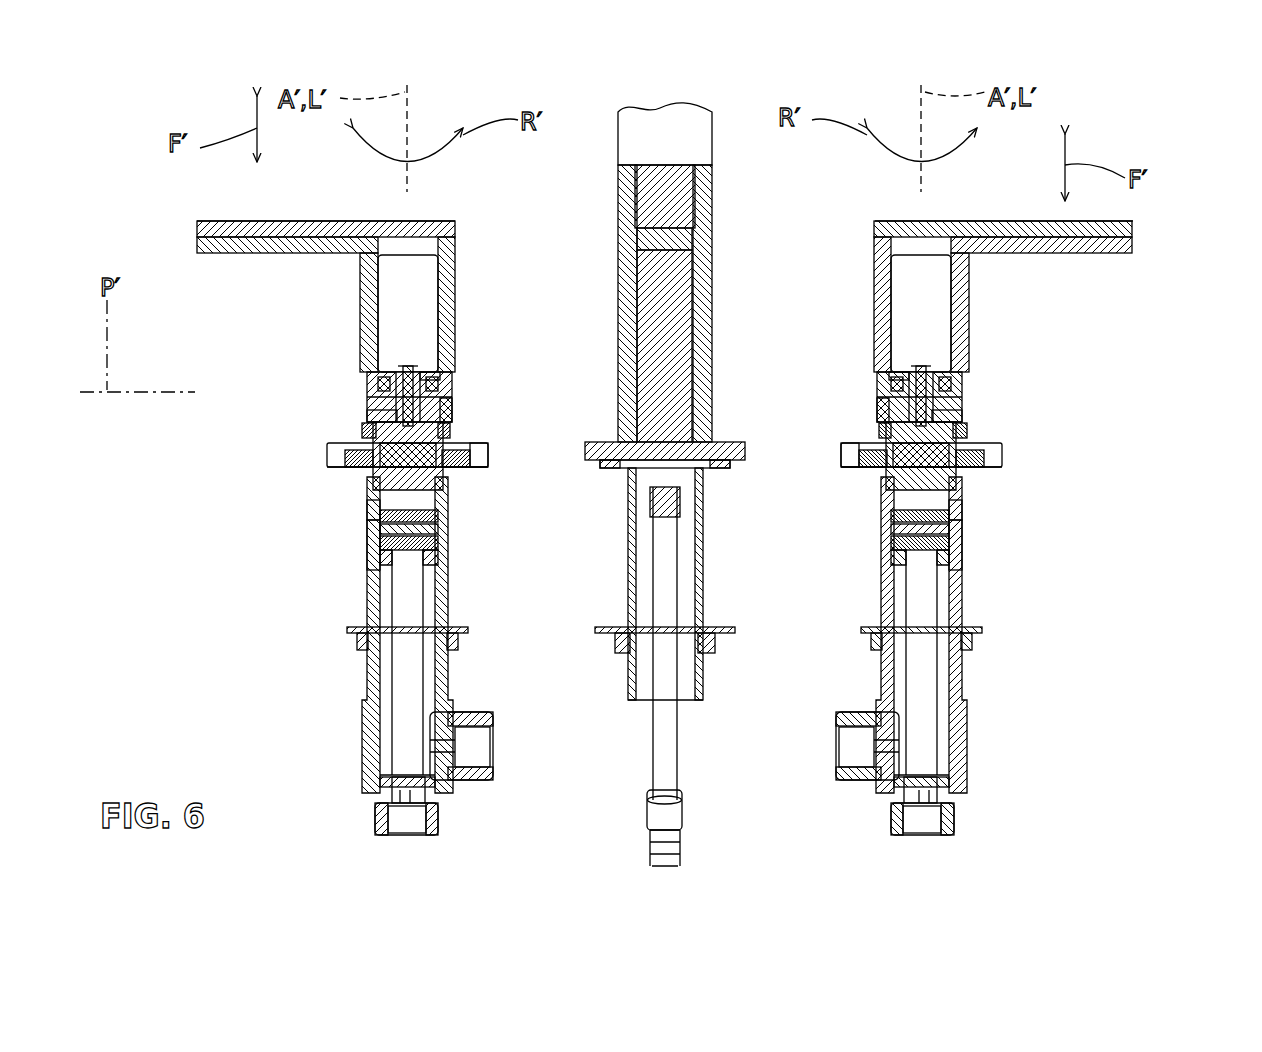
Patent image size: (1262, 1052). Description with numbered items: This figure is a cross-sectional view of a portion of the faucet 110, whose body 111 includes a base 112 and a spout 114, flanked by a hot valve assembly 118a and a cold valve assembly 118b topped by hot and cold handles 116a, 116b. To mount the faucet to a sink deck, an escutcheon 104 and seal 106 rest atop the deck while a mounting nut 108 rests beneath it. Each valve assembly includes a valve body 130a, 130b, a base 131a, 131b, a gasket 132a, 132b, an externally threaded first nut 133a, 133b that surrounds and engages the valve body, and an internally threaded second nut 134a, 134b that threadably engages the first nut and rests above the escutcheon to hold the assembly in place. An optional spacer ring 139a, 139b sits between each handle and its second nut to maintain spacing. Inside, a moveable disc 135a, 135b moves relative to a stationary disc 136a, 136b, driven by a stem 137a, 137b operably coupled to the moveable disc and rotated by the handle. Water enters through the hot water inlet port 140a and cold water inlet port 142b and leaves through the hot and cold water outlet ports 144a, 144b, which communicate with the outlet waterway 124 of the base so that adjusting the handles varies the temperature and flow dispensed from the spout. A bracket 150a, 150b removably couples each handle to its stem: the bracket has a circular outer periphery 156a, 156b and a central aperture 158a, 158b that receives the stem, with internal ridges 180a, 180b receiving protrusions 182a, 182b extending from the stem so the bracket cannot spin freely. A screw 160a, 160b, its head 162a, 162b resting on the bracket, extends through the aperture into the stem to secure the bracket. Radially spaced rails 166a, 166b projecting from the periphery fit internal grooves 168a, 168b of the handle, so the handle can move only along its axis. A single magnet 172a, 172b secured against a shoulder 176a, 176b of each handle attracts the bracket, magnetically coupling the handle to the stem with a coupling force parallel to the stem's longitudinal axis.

The faucet 110 is at (1144, 130).
The body 111 is at (705, 178).
The base 112 is at (632, 222).
The spout 114 is at (632, 138).
The escutcheon 104 is at (738, 442).
The seal 106 is at (722, 470).
The mounting nut 108 is at (598, 636).
The outlet waterway 124 is at (685, 818).
The hot handle 116a is at (197, 235).
The cold handle 116b is at (1133, 235).
The hot valve assembly 118a is at (195, 603).
The cold valve assembly 118b is at (1132, 705).
The valve body 130a is at (367, 700).
The valve body 130b is at (966, 700).
The base 131a is at (440, 560).
The base 131b is at (890, 560).
The gasket 132a is at (366, 560).
The gasket 132b is at (964, 560).
The first nut 133a is at (440, 512).
The first nut 133b is at (890, 512).
The second nut 134a is at (335, 450).
The second nut 134b is at (880, 450).
The moveable disc 135a is at (440, 530).
The moveable disc 135b is at (890, 530).
The stationary disc 136a is at (440, 545).
The stationary disc 136b is at (890, 545).
The stem 137a is at (366, 510).
The stem 137b is at (964, 510).
The spacer ring 139a is at (450, 432).
The spacer ring 139b is at (880, 432).
The hot water inlet port 140a is at (408, 840).
The cold water inlet port 142b is at (921, 840).
The hot water outlet port 144a is at (488, 752).
The cold water outlet port 144b is at (841, 752).
The bracket 150a is at (452, 410).
The right retainer 150b is at (878, 410).
The outer periphery 156a is at (370, 405).
The right valve block 156b is at (962, 405).
The central aperture 158a is at (395, 372).
The right valve pin 158b is at (915, 372).
The screw 160a is at (412, 368).
The right valve seat 160b is at (917, 368).
The head 162a is at (405, 372).
The right cavity 162b is at (922, 372).
The rails 166a is at (368, 418).
The right lower block 166b is at (962, 418).
The internal grooves 168a is at (438, 384).
The right insert 168b is at (892, 384).
The magnet 172a is at (440, 376).
The right upper insert 172b is at (889, 376).
The shoulder 176a is at (452, 372).
The right arm wall 176b is at (970, 372).
The ridges 180a is at (365, 438).
The right ring 180b is at (964, 438).
The protrusions 182a is at (378, 384).
The right spring 182b is at (950, 384).